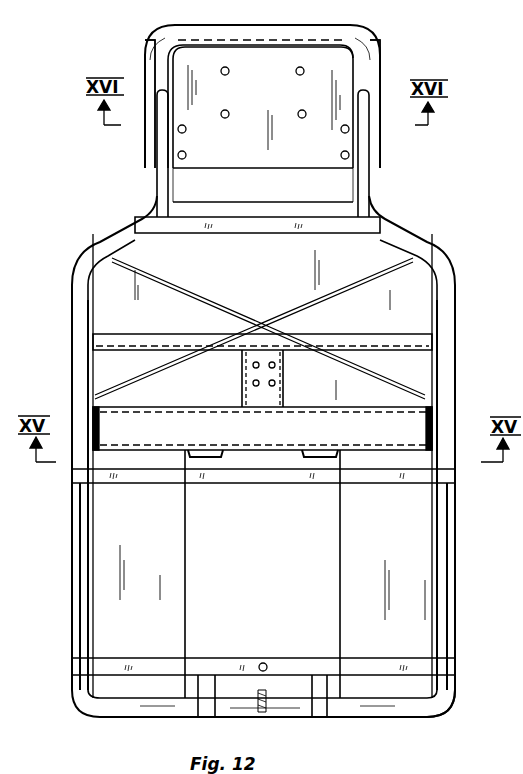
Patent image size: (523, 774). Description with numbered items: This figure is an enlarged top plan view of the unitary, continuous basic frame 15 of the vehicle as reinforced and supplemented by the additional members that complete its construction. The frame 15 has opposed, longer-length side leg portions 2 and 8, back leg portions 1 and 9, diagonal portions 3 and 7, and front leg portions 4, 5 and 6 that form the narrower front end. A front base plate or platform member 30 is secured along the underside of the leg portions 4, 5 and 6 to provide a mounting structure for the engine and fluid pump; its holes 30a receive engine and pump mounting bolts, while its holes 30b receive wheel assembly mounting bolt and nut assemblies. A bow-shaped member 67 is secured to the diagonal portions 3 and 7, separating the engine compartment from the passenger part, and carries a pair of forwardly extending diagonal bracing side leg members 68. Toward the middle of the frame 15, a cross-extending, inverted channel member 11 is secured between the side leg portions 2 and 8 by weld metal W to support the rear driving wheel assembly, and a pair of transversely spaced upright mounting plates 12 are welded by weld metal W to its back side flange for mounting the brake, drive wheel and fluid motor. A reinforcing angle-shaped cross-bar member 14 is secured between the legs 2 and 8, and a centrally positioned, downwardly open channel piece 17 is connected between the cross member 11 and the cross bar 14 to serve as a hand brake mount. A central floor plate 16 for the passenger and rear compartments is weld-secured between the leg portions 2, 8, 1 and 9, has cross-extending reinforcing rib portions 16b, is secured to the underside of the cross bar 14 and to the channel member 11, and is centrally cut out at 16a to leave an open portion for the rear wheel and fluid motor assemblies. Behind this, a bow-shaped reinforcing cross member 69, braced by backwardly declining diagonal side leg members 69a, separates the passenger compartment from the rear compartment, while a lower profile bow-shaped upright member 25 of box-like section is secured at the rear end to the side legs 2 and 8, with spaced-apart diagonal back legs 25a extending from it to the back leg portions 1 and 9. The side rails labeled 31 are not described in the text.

The back leg portion 1 is at (118, 717).
The longer-length side leg portion 2 is at (71, 551).
The diagonal portion 3 is at (103, 226).
The leg portion 4 is at (153, 137).
The leg portion 5 is at (286, 24).
The leg portion 6 is at (383, 140).
The diagonal portion 7 is at (415, 233).
The longer-length side leg portion 8 is at (455, 523).
The back leg portion 9 is at (405, 708).
The inverted channel member 11 is at (340, 417).
The mounting plates 12 is at (317, 450).
The angle-shaped cross-bar member 14 is at (152, 334).
The frame 15 is at (440, 358).
The central floor plate 16 is at (418, 293).
The cut-out 16a is at (193, 578).
The reinforcing rib portions 16b is at (226, 308).
The channel piece 17 is at (242, 373).
The bow-shaped upright member 25 is at (217, 658).
The back legs 25a is at (328, 705).
The front base plate 30 is at (258, 170).
The holes 30a is at (288, 98).
The holes 30b is at (186, 130).
The cap side rails 31 is at (145, 78).
The bow-shaped member 67 is at (290, 234).
The diagonal side leg members 68 is at (157, 182).
The bow-shaped reinforcing cross member 69 is at (373, 488).
The diagonal side leg members 69a is at (447, 584).
The weld metal W is at (94, 425).